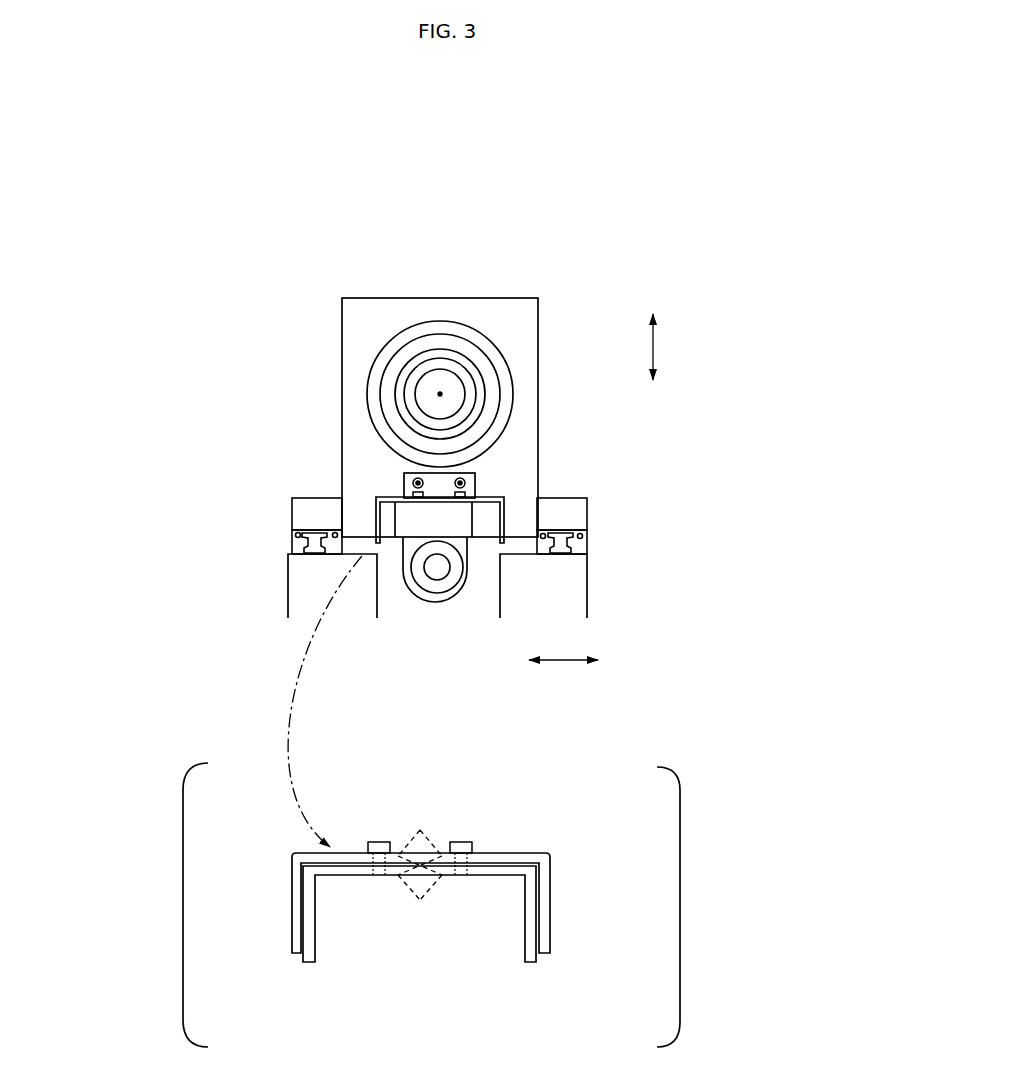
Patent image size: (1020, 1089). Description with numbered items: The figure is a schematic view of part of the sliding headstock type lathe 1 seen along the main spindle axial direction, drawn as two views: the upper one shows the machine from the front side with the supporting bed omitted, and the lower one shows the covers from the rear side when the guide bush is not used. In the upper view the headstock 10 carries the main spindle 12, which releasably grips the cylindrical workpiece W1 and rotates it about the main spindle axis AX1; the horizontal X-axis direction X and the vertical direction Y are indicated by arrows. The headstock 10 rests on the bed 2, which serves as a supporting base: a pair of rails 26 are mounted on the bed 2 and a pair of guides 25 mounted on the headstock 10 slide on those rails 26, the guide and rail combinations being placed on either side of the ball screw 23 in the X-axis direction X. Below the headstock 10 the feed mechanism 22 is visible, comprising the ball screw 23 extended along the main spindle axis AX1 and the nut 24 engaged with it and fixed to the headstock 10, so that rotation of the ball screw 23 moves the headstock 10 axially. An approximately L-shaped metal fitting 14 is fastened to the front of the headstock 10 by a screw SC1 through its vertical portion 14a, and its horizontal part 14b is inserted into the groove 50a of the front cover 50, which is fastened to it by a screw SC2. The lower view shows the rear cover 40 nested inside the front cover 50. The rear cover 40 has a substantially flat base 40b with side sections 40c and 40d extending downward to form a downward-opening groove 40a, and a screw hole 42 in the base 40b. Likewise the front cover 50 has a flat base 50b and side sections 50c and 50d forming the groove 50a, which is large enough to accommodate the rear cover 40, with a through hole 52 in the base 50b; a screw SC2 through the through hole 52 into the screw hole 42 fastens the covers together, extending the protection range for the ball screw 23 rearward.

The sliding headstock type lathe 1 is at (343, 243).
The bed 2 is at (587, 607).
The headstock 10 is at (541, 312).
The main spindle 12 is at (482, 378).
The workpiece W1 is at (414, 382).
The main spindle axis AX1 is at (440, 394).
The metal fitting 14 is at (504, 499).
The upper portion of holder 14a is at (477, 474).
The horizontal part 14b is at (475, 537).
The feed mechanism 22 is at (434, 619).
The ball screw 23 is at (425, 573).
The nut 24 is at (452, 584).
The guides 25 is at (292, 545).
The rails 26 is at (313, 533).
The rear cover 40 is at (540, 963).
The groove 40a is at (362, 876).
The base 40b is at (490, 868).
The side section 40c is at (532, 963).
The side section 40d is at (308, 960).
The screw hole 42 is at (420, 903).
The front cover 50 is at (510, 495).
The groove 50a is at (392, 537).
The base 50b is at (501, 498).
The side section 50c is at (377, 510).
The side section 50d is at (505, 513).
The through hole 52 is at (420, 841).
The screw SC1 is at (457, 482).
The screw SC2 is at (411, 495).
The X-axis direction X is at (563, 677).
The Y direction Y is at (666, 347).